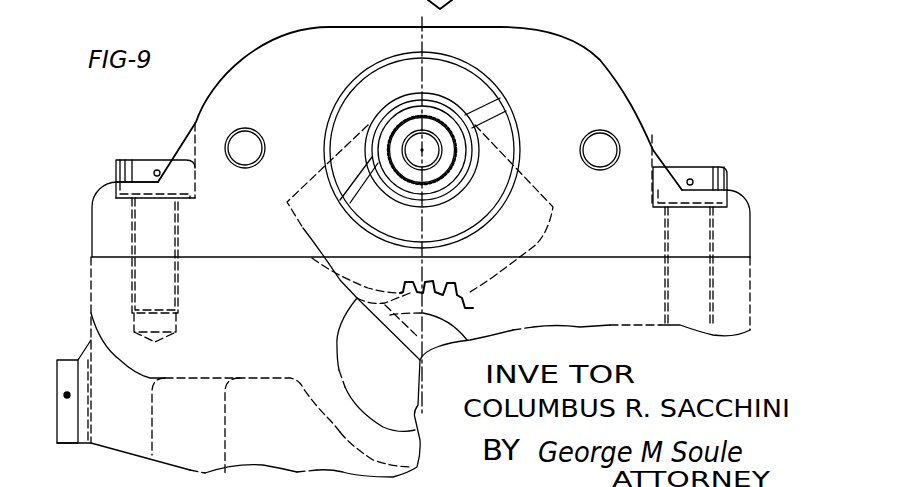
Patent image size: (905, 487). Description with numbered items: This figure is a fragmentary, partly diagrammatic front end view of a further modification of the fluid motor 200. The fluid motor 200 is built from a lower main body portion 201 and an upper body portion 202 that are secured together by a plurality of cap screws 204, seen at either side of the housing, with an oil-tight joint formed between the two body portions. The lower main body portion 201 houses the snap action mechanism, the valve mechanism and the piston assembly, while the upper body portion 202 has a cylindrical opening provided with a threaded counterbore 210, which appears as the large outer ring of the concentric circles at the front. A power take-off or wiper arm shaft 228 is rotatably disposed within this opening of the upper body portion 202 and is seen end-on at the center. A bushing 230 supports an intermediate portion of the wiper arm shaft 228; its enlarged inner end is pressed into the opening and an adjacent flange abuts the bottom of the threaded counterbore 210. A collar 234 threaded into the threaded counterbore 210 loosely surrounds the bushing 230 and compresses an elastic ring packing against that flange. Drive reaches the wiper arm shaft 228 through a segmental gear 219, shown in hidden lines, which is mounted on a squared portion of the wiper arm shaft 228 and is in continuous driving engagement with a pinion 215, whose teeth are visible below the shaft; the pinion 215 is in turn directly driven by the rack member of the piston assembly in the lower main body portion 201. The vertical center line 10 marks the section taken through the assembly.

The section line 10 is at (422, 17).
The fluid motor 200 is at (752, 131).
The lower main body portion 201 is at (598, 312).
The upper body portion 202 is at (578, 53).
The cap screws 204 is at (133, 160).
The threaded counterbore 210 is at (472, 68).
The pinion 215 is at (455, 297).
The segmental gear 219 is at (548, 197).
The wiper arm shaft 228 is at (430, 148).
The bushing 230 is at (457, 161).
The collar 234 is at (478, 94).